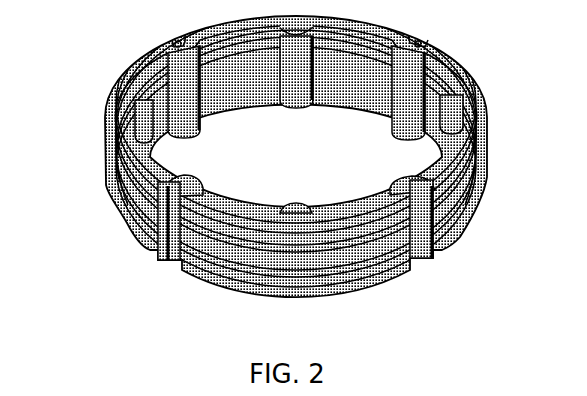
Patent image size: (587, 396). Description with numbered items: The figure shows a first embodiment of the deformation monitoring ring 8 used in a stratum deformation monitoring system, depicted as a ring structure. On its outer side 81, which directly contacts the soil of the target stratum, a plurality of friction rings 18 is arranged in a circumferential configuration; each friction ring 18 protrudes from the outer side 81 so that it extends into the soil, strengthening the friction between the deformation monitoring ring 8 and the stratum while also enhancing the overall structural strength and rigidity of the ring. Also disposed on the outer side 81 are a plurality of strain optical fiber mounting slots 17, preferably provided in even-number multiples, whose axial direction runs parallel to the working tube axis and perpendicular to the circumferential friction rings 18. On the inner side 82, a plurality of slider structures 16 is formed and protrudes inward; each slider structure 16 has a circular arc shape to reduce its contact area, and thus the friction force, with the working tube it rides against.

The deformation monitoring ring 8 is at (103, 297).
The slider structure 16 is at (293, 70).
The strain optical fiber mounting slot 17 is at (420, 244).
The friction ring 18 is at (107, 126).
The outer side 81 is at (474, 70).
The inner side 82 is at (224, 90).